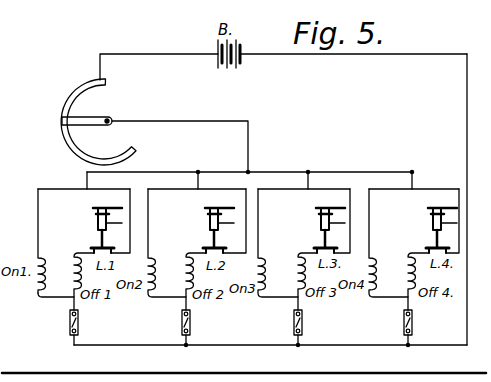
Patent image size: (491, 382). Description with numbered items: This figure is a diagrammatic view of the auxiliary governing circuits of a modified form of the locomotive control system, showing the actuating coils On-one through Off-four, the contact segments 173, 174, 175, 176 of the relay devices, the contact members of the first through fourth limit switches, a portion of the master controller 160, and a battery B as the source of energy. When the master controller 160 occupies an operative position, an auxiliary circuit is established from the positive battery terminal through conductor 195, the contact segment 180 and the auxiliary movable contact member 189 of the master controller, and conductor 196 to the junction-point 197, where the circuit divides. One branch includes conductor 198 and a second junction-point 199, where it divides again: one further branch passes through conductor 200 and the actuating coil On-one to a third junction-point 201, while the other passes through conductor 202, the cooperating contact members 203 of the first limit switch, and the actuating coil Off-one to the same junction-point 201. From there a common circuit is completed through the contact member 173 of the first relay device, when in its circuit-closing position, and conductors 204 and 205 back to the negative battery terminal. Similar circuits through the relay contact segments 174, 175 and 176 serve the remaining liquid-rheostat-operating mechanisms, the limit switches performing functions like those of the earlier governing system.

The master controller 160 is at (91, 119).
The arcuate contact segment 180 is at (86, 90).
The auxiliary movable contact member 189 is at (88, 126).
The conductor 195 is at (190, 55).
The conductor 196 is at (211, 121).
The junction-point 197 is at (250, 172).
The conductor 198 is at (136, 172).
The second junction-point 199 is at (87, 188).
The conductor 200 is at (39, 211).
The third junction-point 201 is at (73, 297).
The conductor 202 is at (119, 189).
The contact members of limit switch 203 is at (91, 248).
The conductor 204 is at (162, 346).
The conductor 205 is at (467, 108).
The contact member of relay device 173 is at (79, 324).
The contact segment of relay device 174 is at (191, 324).
The contact segment of relay device 175 is at (303, 324).
The contact segment of relay device 176 is at (413, 324).